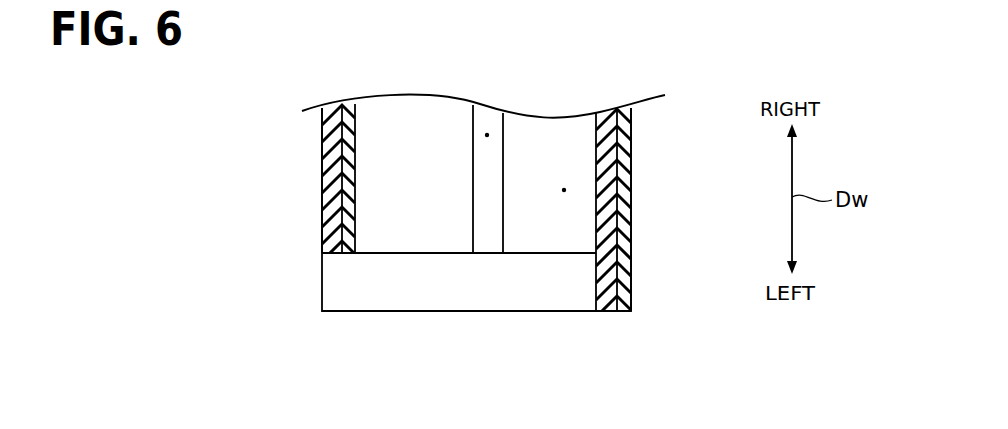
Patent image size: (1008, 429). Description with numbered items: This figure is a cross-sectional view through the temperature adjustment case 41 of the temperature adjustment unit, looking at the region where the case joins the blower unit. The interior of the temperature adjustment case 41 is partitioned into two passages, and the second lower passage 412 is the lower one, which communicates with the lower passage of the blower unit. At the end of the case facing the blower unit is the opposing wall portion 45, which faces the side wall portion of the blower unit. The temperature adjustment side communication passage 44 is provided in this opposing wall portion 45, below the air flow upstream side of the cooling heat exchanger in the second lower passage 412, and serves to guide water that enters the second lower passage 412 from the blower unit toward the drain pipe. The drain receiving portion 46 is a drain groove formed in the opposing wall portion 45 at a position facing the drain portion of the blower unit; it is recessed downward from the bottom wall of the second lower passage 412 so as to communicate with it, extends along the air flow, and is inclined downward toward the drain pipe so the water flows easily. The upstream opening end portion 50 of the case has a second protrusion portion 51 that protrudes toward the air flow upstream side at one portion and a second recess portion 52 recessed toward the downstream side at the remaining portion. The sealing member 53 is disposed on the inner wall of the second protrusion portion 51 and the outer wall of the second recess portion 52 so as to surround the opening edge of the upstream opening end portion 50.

The temperature adjustment case 41 is at (316, 193).
The second lower passage 412 is at (564, 190).
The temperature adjustment side communication passage 44 is at (486, 133).
The opposing wall portion 45 is at (435, 264).
The drain receiving portion 46 is at (492, 232).
The upstream opening end portion 50 is at (468, 322).
The second protrusion portion 51 is at (626, 313).
The second recess portion 52 is at (355, 253).
The sealing member 53 is at (335, 152).